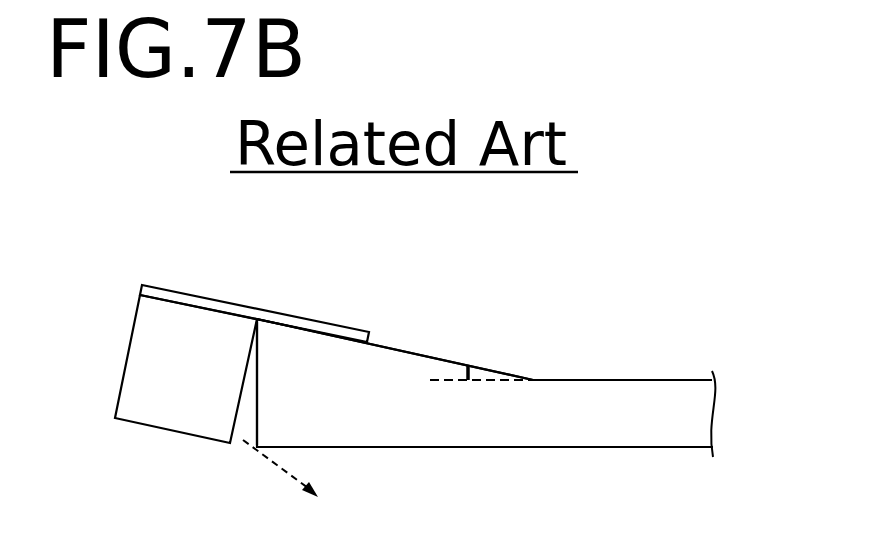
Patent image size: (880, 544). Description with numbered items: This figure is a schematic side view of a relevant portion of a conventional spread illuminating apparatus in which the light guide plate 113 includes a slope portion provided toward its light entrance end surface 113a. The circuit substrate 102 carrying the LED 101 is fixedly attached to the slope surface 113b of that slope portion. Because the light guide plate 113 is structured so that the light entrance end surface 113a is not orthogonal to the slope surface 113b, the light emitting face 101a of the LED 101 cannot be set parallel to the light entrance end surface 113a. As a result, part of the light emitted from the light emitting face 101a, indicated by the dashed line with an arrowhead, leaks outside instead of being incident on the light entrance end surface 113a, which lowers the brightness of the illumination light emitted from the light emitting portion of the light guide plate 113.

The LED 101 is at (178, 410).
The light emitting face 101a is at (242, 400).
The circuit substrate 102 is at (293, 322).
The light guide plate 113 is at (590, 400).
The light entrance end surface 113a is at (257, 360).
The slope surface 113b is at (392, 352).